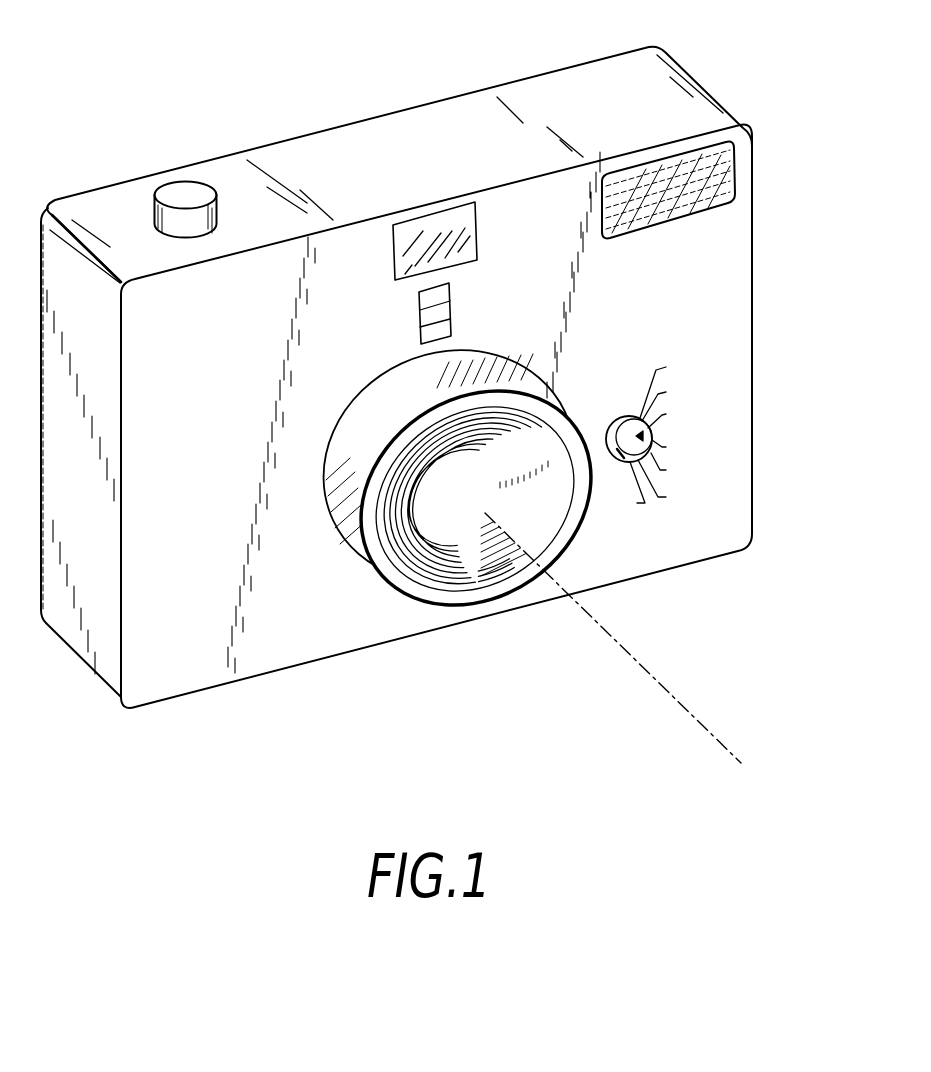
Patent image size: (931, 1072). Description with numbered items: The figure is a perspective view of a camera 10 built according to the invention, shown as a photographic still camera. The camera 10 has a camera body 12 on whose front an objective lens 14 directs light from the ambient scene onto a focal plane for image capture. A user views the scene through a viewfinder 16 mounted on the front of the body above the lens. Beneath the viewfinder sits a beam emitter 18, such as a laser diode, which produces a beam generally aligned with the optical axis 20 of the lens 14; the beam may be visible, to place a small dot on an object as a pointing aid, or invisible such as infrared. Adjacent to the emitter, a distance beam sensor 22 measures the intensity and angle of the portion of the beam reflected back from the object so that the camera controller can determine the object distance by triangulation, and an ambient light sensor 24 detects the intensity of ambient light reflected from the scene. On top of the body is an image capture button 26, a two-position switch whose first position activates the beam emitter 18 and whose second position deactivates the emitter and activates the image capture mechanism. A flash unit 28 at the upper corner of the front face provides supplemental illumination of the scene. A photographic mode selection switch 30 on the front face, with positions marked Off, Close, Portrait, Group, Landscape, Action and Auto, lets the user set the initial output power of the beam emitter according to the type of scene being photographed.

The camera 10 is at (218, 73).
The camera body 12 is at (573, 92).
The objective lens 14 is at (392, 592).
The viewfinder 16 is at (438, 240).
The beam emitter 18 is at (418, 312).
The optical axis 20 is at (670, 692).
The distance beam sensor 22 is at (452, 325).
The ambient light sensor 24 is at (452, 290).
The image capture button 26 is at (183, 192).
The flash unit 28 is at (742, 190).
The photographic mode selection switch 30 is at (632, 418).